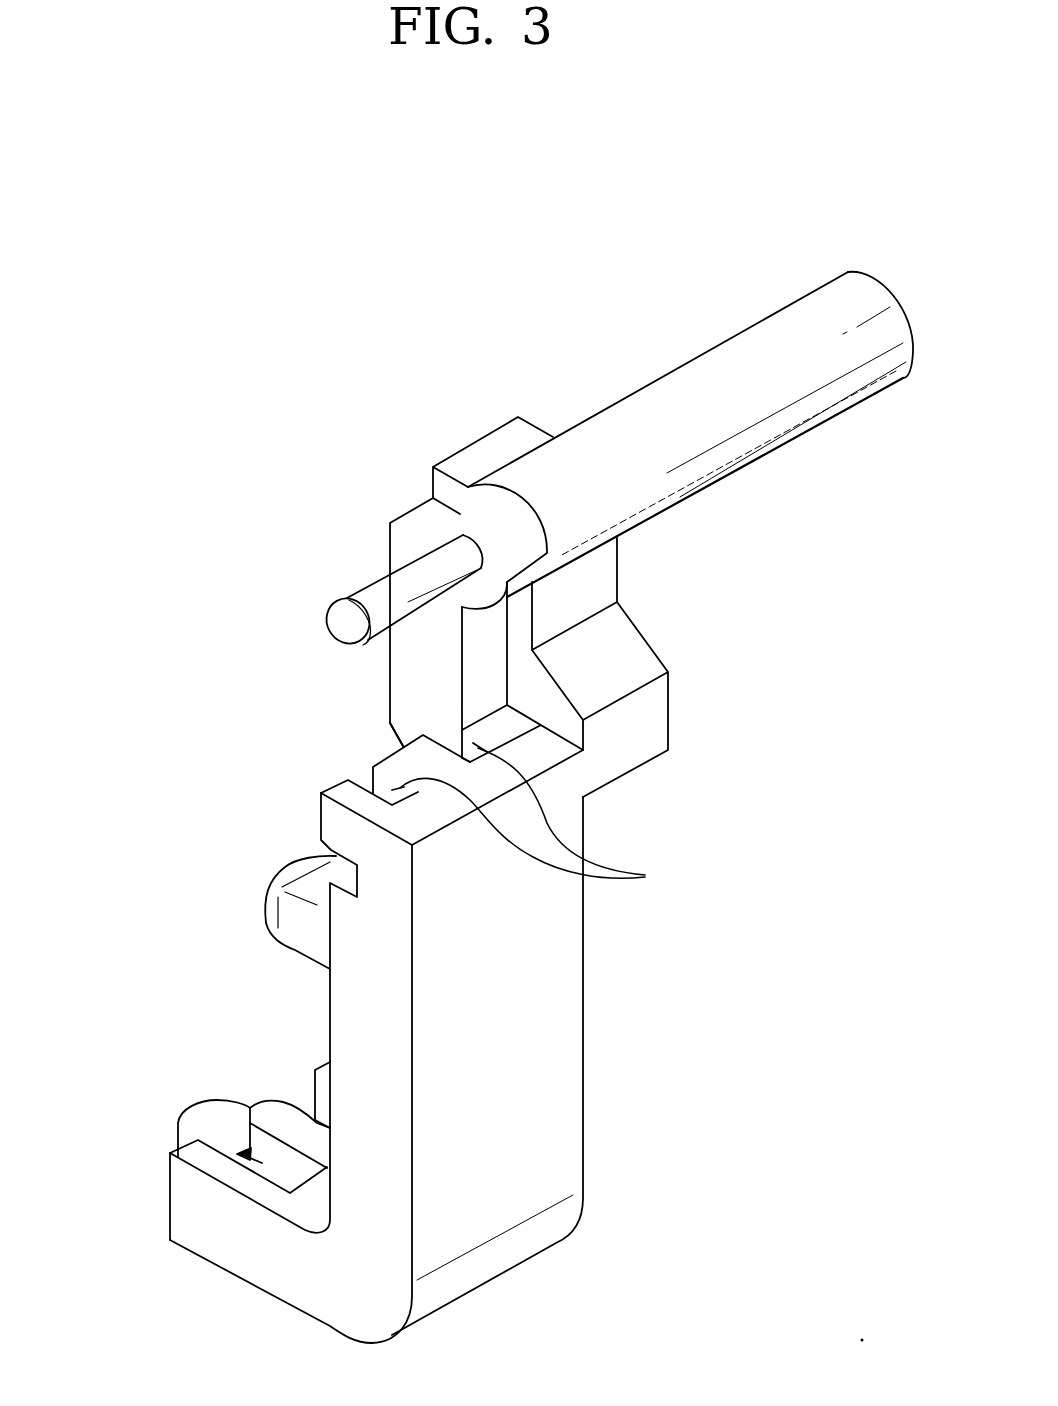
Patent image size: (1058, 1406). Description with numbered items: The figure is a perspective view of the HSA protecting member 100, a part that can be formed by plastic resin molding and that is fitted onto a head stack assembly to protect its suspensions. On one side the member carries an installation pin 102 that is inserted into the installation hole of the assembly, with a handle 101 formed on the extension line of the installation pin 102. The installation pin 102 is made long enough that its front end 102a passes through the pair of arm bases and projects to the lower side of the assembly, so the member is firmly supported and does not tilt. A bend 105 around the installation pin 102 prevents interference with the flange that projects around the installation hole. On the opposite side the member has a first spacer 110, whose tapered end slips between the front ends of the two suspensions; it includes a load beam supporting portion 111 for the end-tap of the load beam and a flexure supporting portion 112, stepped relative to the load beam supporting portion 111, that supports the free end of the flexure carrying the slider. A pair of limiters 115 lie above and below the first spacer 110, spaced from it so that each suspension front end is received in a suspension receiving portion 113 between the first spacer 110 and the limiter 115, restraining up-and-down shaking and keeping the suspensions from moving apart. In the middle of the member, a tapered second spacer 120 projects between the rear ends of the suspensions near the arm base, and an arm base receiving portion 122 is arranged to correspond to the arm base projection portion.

The HSA protecting member 100 is at (204, 394).
The handle 101 is at (757, 463).
The installation pin 102 is at (373, 588).
The front end of the installation pin 102a is at (333, 630).
The bend 105 is at (422, 505).
The first spacer 110 is at (187, 997).
The load beam supporting portion 111 is at (203, 1127).
The flexure supporting portion 112 is at (270, 1113).
The suspension receiving portion 113 is at (313, 1104).
The limiter 115 is at (200, 1230).
The second spacer 120 is at (285, 872).
The arm base receiving portion 122 is at (555, 818).